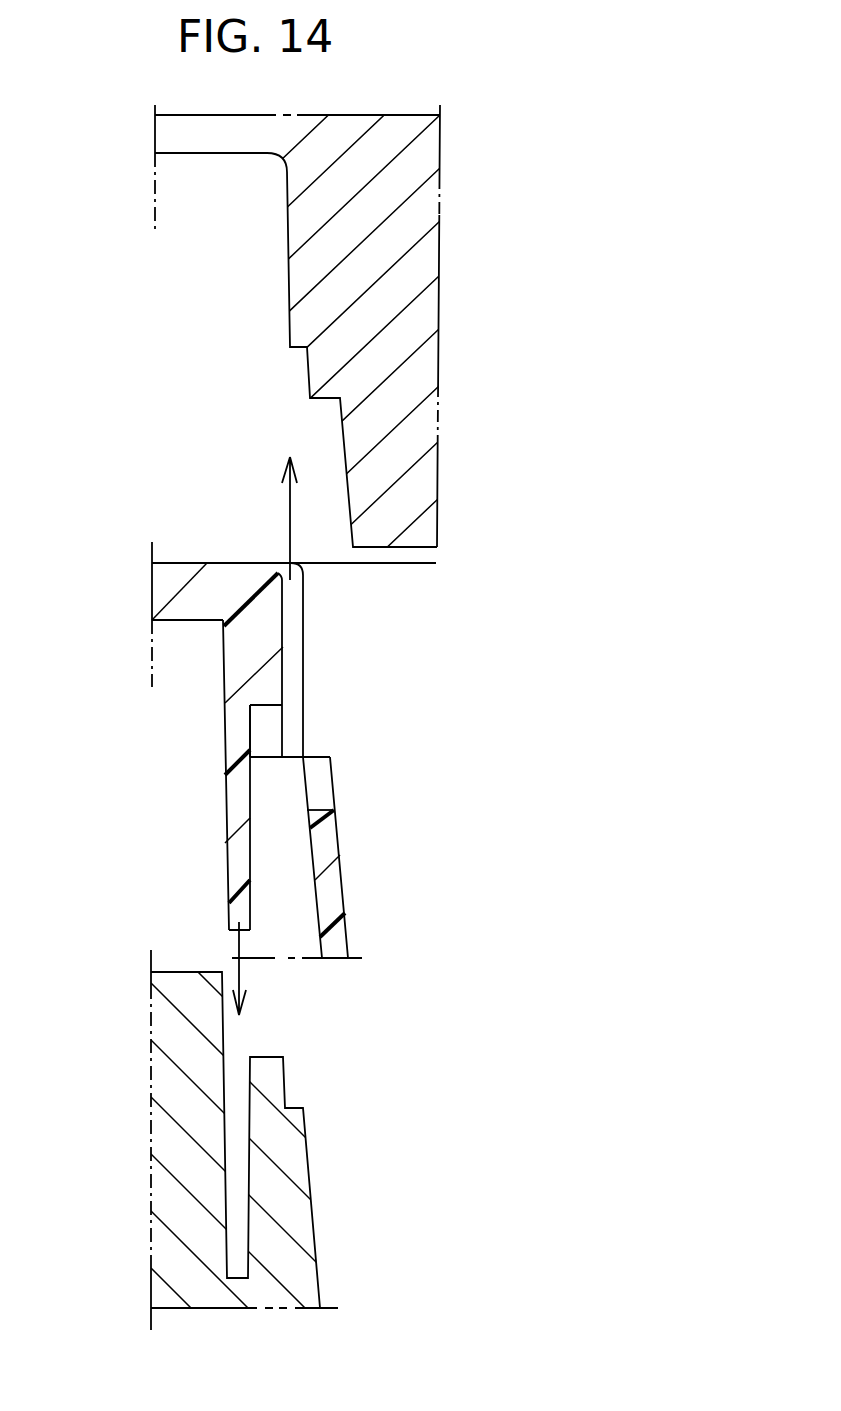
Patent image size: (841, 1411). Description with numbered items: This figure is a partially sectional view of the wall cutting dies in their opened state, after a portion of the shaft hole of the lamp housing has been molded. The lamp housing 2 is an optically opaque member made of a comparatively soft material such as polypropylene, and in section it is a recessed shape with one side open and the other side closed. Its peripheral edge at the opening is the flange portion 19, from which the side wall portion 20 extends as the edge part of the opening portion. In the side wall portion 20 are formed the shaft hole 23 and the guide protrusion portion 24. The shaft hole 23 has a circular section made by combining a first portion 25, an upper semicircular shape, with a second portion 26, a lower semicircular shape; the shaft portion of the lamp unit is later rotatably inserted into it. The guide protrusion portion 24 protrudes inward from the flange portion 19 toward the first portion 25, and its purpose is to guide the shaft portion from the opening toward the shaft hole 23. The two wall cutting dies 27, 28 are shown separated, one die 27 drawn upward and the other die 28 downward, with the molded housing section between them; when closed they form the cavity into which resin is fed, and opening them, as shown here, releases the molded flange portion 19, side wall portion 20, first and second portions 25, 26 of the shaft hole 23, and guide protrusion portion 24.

The lamp housing 2 is at (157, 519).
The flange portion 19 is at (183, 575).
The side wall portion 20 is at (228, 673).
The shaft hole 23 is at (361, 771).
The guide protrusion portion 24 is at (303, 628).
The first portion 25 is at (267, 707).
The second portion 26 is at (310, 810).
The wall cutting die 27 is at (428, 200).
The wall cutting die 28 is at (162, 1125).